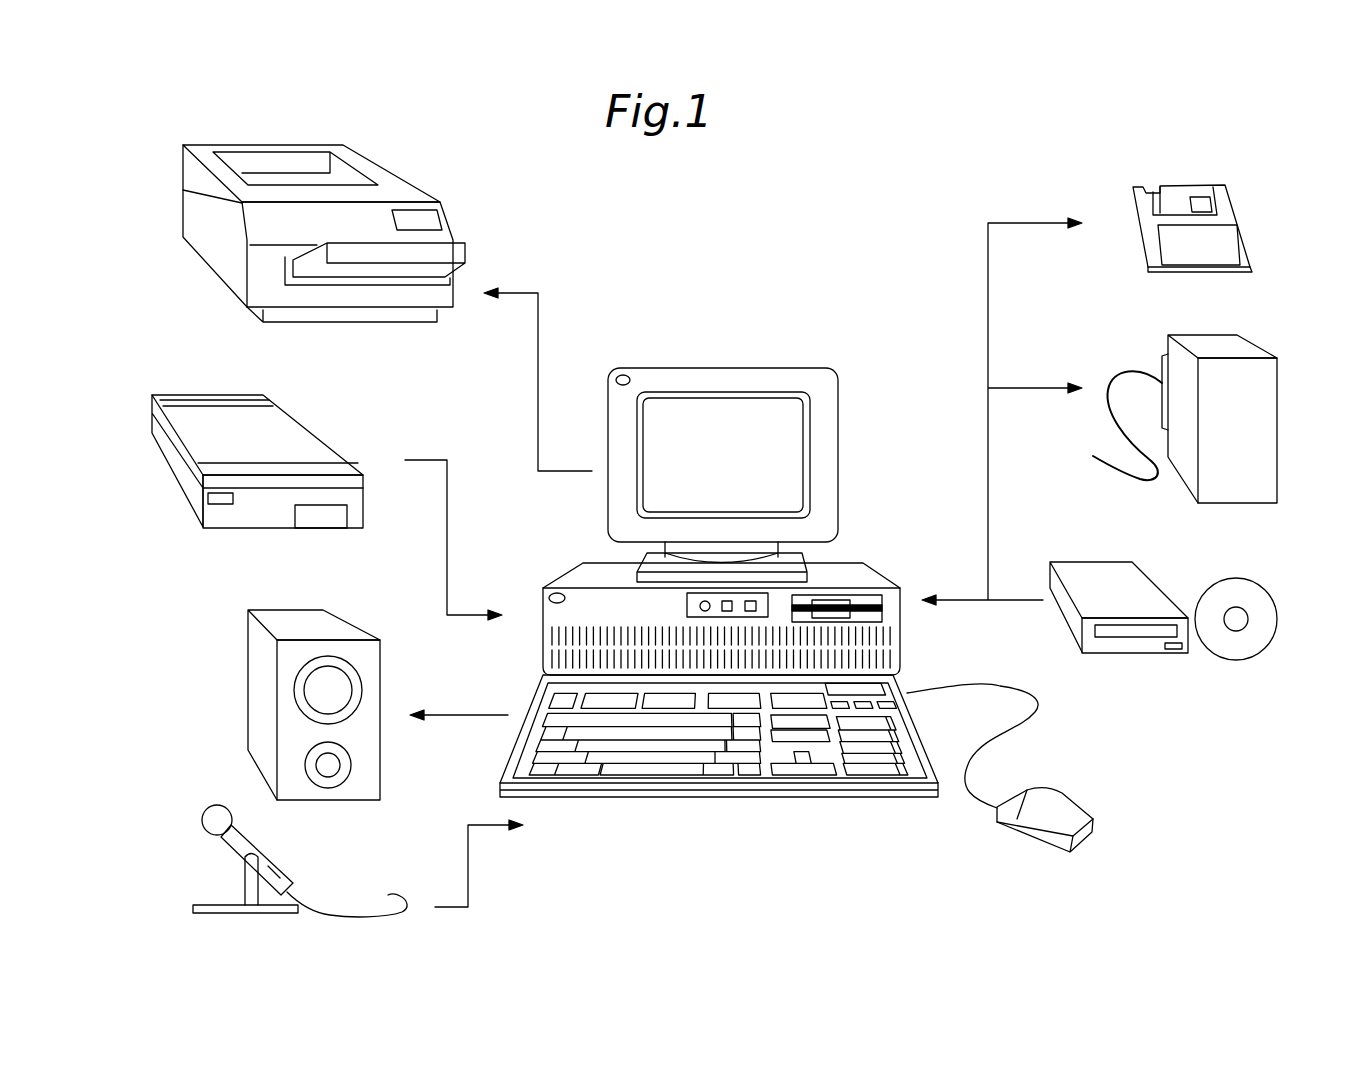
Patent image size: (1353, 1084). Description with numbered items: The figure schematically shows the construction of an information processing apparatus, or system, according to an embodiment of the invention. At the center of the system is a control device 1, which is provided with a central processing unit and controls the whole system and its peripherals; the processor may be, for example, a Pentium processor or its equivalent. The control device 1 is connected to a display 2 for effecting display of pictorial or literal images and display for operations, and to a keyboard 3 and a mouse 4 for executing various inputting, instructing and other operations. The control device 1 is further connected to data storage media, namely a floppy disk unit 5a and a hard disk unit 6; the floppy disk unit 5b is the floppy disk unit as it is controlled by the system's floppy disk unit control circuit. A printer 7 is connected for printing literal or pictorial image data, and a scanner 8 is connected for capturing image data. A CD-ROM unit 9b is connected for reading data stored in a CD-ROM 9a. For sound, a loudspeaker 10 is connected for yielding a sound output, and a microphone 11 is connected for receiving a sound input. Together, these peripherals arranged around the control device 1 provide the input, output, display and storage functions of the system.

The control device 1 is at (708, 600).
The display 2 is at (607, 445).
The keyboard 3 is at (533, 704).
The mouse 4 is at (1035, 822).
The floppy disk unit 5a is at (1222, 242).
The floppy disk unit 5b is at (863, 600).
The hard disk unit 6 is at (1237, 345).
The printer 7 is at (407, 192).
The scanner 8 is at (295, 442).
The CD-ROM 9a is at (1260, 597).
The CD-ROM unit 9b is at (1103, 578).
The loudspeaker 10 is at (317, 620).
The microphone 11 is at (272, 871).